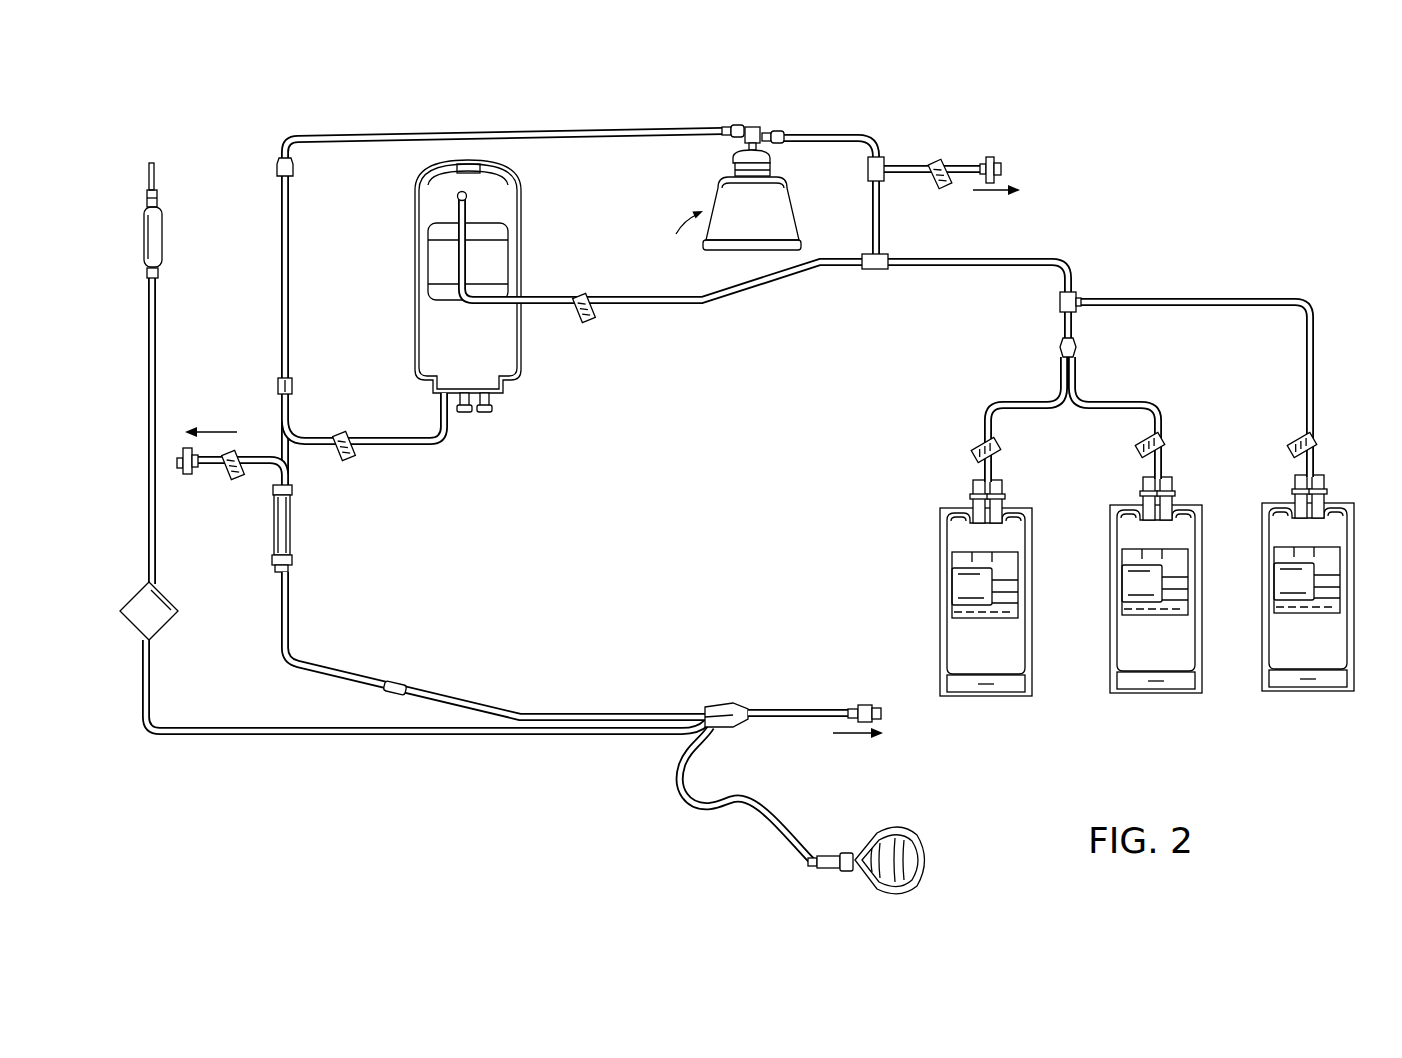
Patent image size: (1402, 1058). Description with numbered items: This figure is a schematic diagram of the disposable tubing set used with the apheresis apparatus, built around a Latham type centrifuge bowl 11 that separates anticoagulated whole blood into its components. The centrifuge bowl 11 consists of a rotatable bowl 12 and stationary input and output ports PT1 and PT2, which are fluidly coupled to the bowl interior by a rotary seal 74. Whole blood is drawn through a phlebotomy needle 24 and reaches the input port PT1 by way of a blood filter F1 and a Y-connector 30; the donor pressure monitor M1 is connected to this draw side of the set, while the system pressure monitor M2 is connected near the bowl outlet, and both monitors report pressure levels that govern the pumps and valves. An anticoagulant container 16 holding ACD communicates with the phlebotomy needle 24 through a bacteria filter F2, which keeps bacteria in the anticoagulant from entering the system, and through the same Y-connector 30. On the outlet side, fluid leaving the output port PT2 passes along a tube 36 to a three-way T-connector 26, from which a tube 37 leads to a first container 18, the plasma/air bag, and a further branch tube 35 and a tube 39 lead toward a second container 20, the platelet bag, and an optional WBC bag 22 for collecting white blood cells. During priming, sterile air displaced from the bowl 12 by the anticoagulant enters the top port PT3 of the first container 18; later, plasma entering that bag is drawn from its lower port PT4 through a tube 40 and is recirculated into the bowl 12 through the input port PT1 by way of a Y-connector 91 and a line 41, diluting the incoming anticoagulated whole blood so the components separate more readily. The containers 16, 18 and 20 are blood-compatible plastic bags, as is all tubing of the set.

The centrifuge bowl 11 is at (682, 235).
The rotatable bowl 12 is at (794, 224).
The anticoagulant container 16 is at (844, 751).
The first container 18 is at (525, 360).
The second container 20 is at (992, 697).
The WBC bag 22 is at (1308, 693).
The phlebotomy needle 24 is at (159, 184).
The 3-way T-connector 26 is at (882, 162).
The Y-connector 30 is at (727, 705).
The tubing line 35 is at (1155, 296).
The tube 36 is at (836, 130).
The tube 37 is at (742, 290).
The tube 39 is at (1118, 400).
The tube 40 is at (391, 448).
The line 41 is at (387, 137).
The rotary seal 74 is at (732, 166).
The Y-connector 91 is at (290, 166).
The blood filter F1 is at (291, 530).
The bacteria filter F2 is at (168, 622).
The donor pressure monitor M1 is at (227, 425).
The system pressure monitor M2 is at (1040, 178).
The input port PT1 is at (733, 126).
The output port PT2 is at (775, 129).
The top port PT3 is at (516, 196).
The lower port PT4 is at (448, 419).